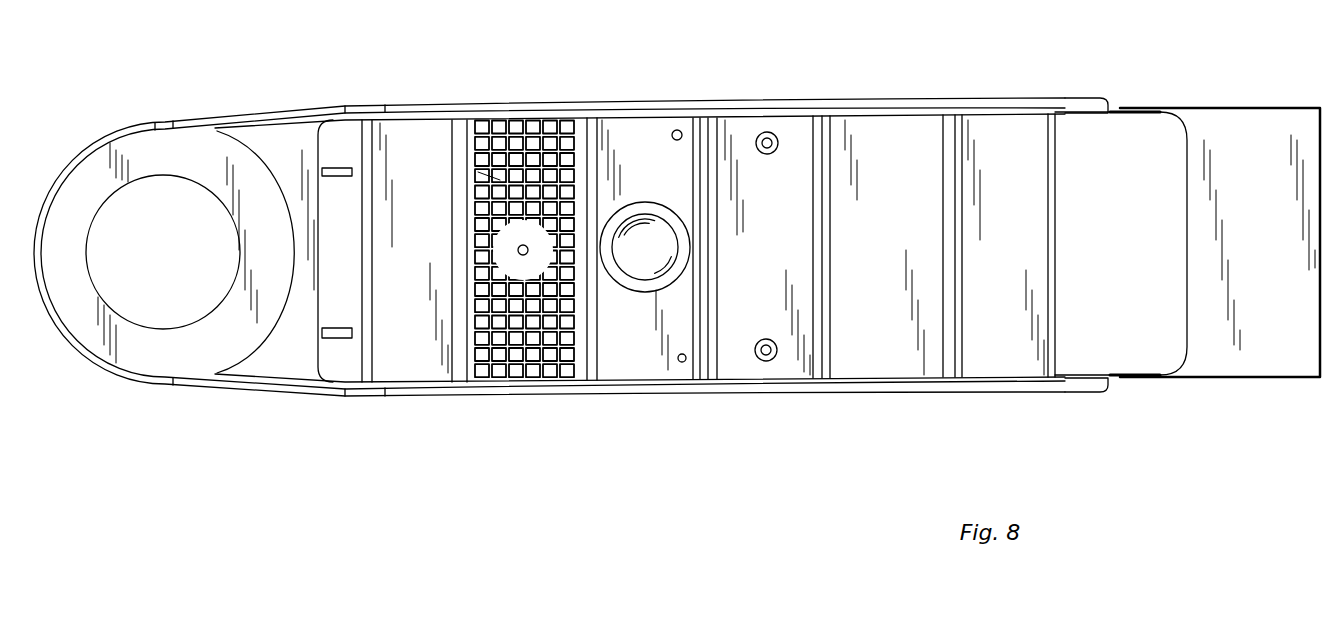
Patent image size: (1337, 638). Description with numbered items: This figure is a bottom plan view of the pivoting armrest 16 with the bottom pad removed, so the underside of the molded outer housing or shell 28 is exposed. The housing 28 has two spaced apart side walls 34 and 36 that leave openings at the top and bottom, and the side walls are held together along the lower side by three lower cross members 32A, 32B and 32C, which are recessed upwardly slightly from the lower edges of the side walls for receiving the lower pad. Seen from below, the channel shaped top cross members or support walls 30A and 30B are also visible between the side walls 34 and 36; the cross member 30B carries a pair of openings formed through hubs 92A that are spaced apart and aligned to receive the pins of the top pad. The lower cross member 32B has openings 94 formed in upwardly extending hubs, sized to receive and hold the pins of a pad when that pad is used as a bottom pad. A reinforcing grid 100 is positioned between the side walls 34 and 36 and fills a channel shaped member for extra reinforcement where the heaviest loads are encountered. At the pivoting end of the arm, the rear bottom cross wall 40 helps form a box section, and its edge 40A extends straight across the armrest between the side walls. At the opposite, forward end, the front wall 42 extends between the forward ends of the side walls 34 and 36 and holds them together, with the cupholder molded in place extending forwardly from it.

The pivoting armrest 16 is at (651, 91).
The outer housing 28 is at (322, 397).
The top cross member 30A is at (1008, 352).
The top cross member 30B is at (793, 363).
The lower cross member 32A is at (893, 143).
The lower cross member 32B is at (642, 367).
The lower cross member 32C is at (416, 372).
The side wall 34 is at (487, 106).
The side wall 36 is at (546, 398).
The bottom cross wall 40 is at (1280, 340).
The edge of lower wall 40A is at (1187, 318).
The front wall 42 is at (322, 250).
The hub 92A is at (767, 155).
The opening 94 is at (678, 130).
The reinforcing grid 100 is at (500, 180).